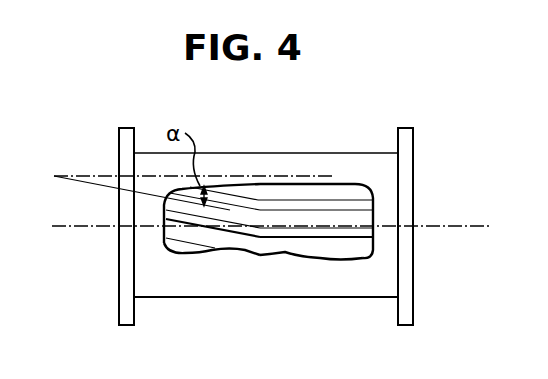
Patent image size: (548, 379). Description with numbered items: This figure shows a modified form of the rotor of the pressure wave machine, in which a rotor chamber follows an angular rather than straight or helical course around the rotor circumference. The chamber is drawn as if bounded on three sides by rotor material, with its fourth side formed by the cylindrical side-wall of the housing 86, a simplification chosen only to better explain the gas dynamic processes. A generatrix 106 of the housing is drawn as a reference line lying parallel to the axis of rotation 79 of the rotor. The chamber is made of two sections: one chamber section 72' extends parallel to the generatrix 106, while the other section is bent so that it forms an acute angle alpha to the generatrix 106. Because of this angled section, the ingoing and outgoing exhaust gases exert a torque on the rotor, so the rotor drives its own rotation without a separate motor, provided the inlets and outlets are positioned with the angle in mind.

The generatrix 106 is at (93, 176).
The chamber section 72' is at (315, 184).
The axis of rotation 79 is at (452, 226).
The housing 86 is at (270, 280).